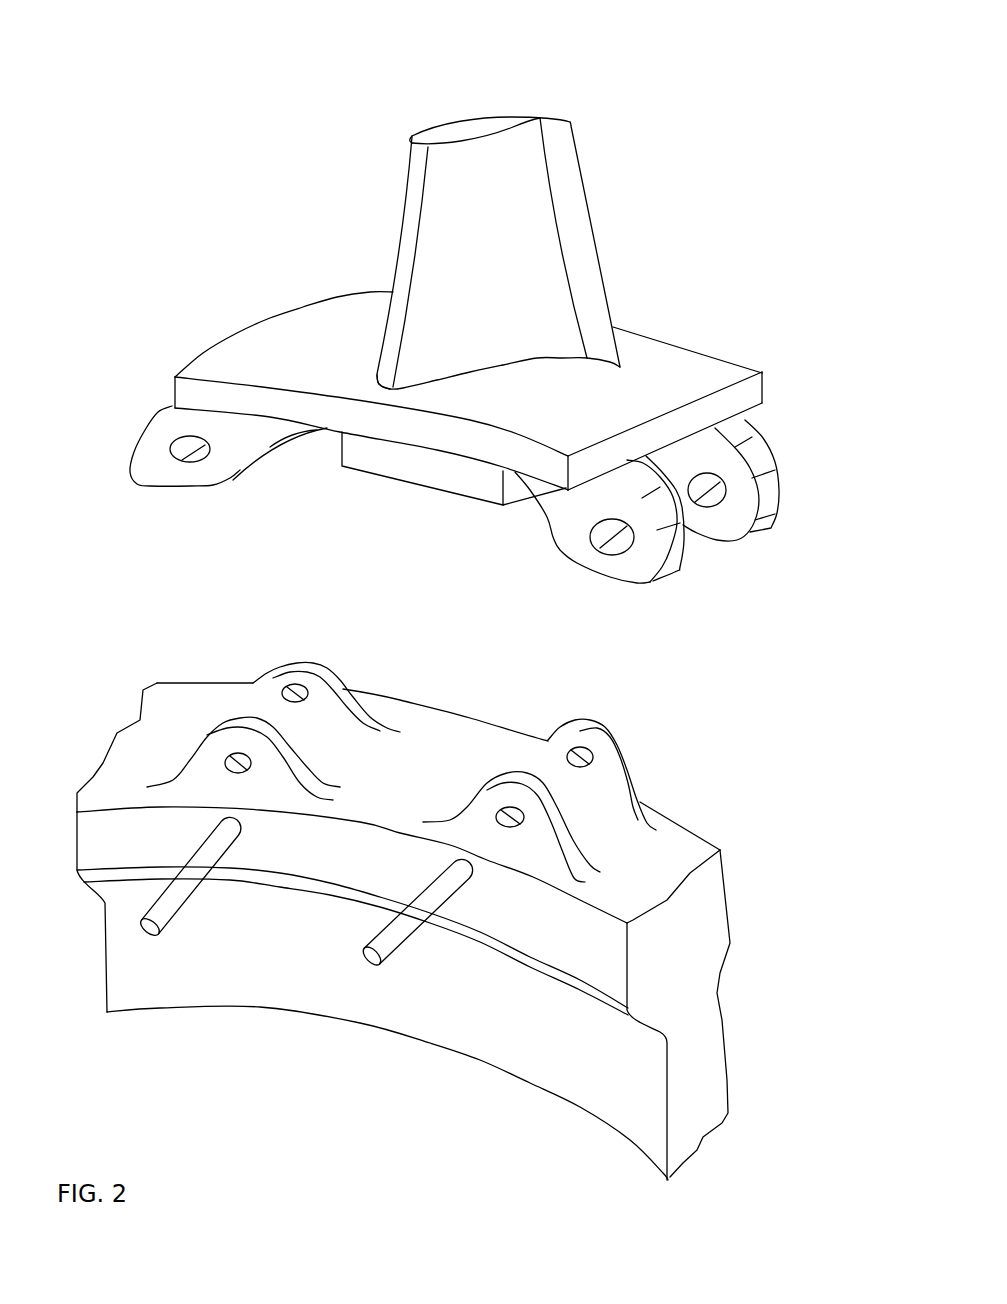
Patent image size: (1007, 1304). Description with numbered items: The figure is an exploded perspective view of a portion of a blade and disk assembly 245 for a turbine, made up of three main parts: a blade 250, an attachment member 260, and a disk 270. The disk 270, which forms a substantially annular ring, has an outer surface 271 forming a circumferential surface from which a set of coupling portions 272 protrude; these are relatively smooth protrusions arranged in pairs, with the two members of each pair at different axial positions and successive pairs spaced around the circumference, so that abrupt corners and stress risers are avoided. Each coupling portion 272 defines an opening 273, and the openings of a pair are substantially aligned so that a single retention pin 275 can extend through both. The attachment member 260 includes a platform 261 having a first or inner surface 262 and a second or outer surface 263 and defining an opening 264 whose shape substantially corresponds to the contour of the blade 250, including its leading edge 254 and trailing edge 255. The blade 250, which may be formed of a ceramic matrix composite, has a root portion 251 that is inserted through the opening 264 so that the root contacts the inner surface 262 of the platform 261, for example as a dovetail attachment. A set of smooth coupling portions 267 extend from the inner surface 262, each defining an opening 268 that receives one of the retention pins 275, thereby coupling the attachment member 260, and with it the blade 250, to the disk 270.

The blade and disk assembly 245 is at (213, 72).
The blade 250 is at (425, 122).
The leading edge 254 is at (402, 229).
The trailing edge 255 is at (588, 236).
The attachment member 260 is at (274, 313).
The opening 264 is at (378, 362).
The second (or outer) surface 263 is at (680, 361).
The root portion 251 is at (440, 475).
The platform 261 is at (390, 423).
The first (or inner) surface 262 is at (487, 467).
The coupling portions 267 is at (150, 427).
The opening 268 is at (189, 458).
The disk 270 is at (669, 800).
The outer surface 271 is at (430, 727).
The coupling portions 272 is at (210, 738).
The opening 273 is at (233, 757).
The retention pin 275 is at (163, 937).